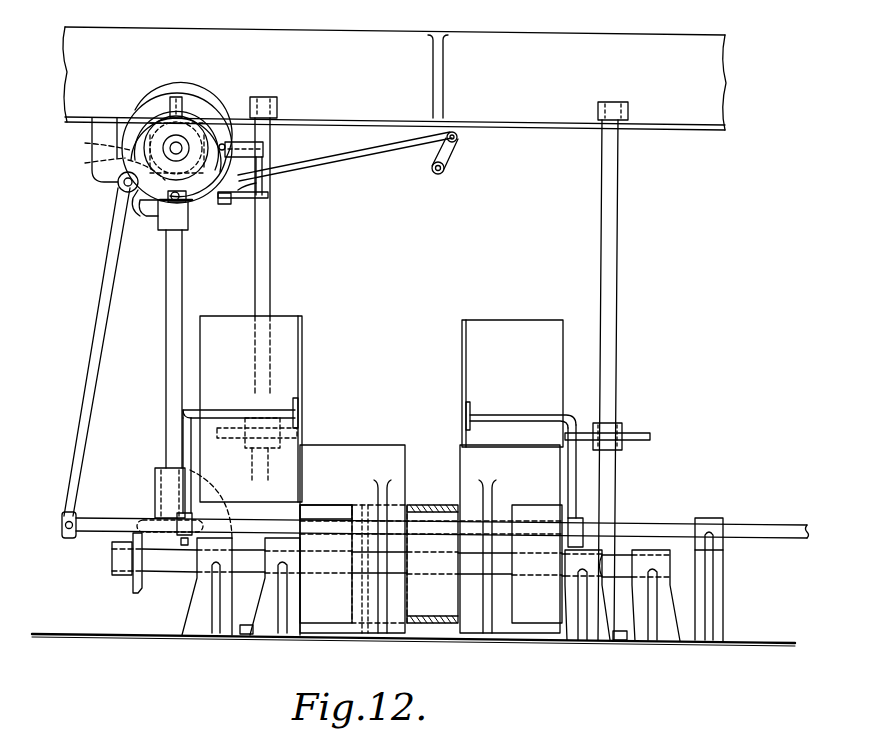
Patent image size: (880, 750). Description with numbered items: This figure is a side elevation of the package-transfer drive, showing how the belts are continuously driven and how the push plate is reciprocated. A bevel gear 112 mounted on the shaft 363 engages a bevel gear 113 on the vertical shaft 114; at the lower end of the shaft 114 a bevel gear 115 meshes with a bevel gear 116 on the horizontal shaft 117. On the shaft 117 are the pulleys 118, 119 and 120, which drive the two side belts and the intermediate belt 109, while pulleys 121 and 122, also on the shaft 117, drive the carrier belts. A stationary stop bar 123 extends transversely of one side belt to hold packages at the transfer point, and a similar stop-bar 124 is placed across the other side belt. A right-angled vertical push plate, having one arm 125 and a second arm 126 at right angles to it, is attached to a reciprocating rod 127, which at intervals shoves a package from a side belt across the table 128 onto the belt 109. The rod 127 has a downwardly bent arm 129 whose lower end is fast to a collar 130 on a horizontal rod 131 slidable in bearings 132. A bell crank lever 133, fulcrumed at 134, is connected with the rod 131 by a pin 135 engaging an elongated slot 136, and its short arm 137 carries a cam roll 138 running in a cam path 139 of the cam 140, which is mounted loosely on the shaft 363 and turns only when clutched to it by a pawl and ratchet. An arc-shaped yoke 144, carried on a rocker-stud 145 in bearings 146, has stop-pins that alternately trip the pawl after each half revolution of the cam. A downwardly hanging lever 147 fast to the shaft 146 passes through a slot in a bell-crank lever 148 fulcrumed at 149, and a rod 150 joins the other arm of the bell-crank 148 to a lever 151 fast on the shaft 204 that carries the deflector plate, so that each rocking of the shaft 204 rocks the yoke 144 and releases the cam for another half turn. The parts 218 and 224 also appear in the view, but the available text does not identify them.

The belt 109 is at (440, 492).
The bevel gear 112 is at (91, 150).
The bevel gear 113 is at (109, 168).
The vertical shaft 114 is at (183, 283).
The bevel gear 115 is at (150, 522).
The bevel gear 116 is at (122, 576).
The horizontal shaft 117 is at (190, 556).
The pulley 118 is at (332, 582).
The pulley 119 is at (437, 582).
The pulley 120 is at (542, 582).
The pulley 121 is at (372, 585).
The pulley 122 is at (482, 585).
The stationary stop bar 123 is at (362, 443).
The stop-bar 124 is at (527, 444).
The push plate arm 125 is at (304, 355).
The push plate arm 126 is at (283, 318).
The reciprocating rod 127 is at (224, 412).
The table 128 is at (364, 510).
The downwardly bent arm 129 is at (183, 424).
The collar 130 is at (182, 540).
The horizontal rod 131 is at (100, 532).
The bearings 132 is at (718, 508).
The bell crank lever 133 is at (95, 337).
The fulcrum 134 is at (120, 190).
The pin 135 is at (62, 528).
The elongated slot 136 is at (76, 518).
The short arm 137 is at (153, 225).
The cam roll 138 is at (188, 210).
The cam path 139 is at (182, 200).
The cam 140 is at (162, 110).
The arc-shaped yoke 144 is at (205, 108).
The rocker-stud 145 is at (262, 138).
The bearings 146 is at (241, 160).
The downwardly hanging lever 147 is at (264, 178).
The bell-crank lever 148 is at (268, 197).
The fulcrum 149 is at (232, 204).
The rod 150 is at (355, 166).
The lever 151 is at (447, 153).
The shaft 204 is at (443, 171).
The rod 218 is at (270, 283).
The shaft 224 is at (618, 291).
The shaft 363 is at (176, 148).